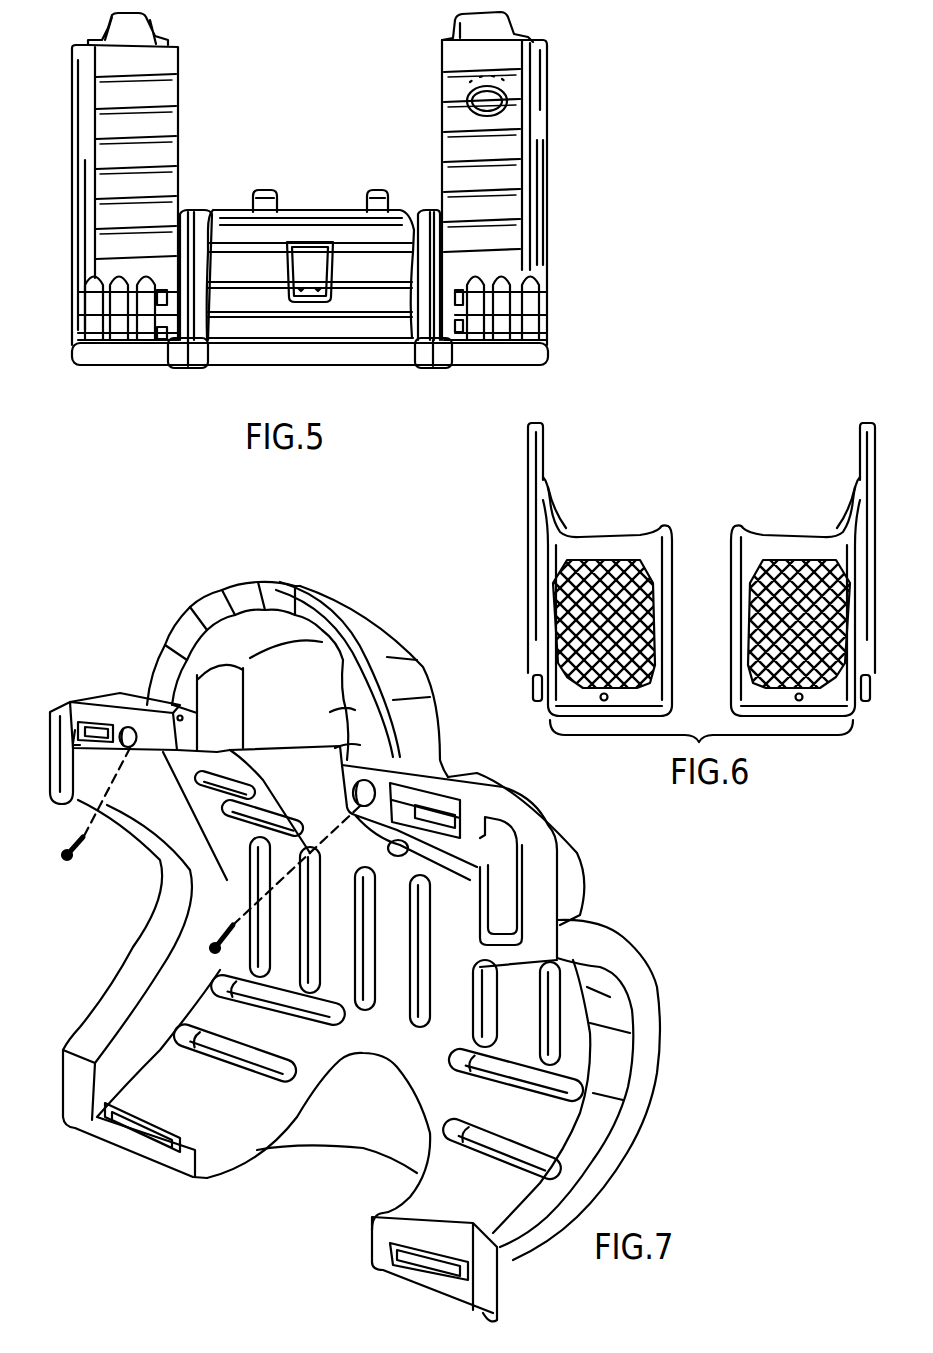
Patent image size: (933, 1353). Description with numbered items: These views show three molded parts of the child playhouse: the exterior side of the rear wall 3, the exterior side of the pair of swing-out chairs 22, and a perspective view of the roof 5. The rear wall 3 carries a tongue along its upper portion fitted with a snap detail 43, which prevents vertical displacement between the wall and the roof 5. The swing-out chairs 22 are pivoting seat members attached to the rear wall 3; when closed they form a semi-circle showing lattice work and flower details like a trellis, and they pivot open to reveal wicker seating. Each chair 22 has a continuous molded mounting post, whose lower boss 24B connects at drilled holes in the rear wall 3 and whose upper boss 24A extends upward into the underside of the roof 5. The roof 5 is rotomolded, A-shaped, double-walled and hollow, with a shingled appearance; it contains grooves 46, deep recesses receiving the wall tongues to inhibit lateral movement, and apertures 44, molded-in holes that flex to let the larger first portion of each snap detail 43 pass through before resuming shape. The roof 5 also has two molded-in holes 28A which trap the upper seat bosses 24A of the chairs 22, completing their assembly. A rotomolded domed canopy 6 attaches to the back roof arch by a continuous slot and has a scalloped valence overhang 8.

In FIG. 5, the rear wall 3 is at (305, 325).
In FIG. 5, the snap detail 43 is at (137, 30).
In FIG. 6, the upper seat boss 24A is at (537, 428).
In FIG. 6, the lower seat boss 24B is at (533, 692).
In FIG. 6, the swing-out chair 22 is at (752, 678).
In FIG. 7, the roof 5 is at (533, 797).
In FIG. 7, the domed canopy 6 is at (393, 630).
In FIG. 7, the scalloped valence overhang 8 is at (257, 603).
In FIG. 7, the aperture 44 is at (110, 727).
In FIG. 7, the groove 46 is at (63, 747).
In FIG. 7, the molded-in hole 28A is at (372, 790).